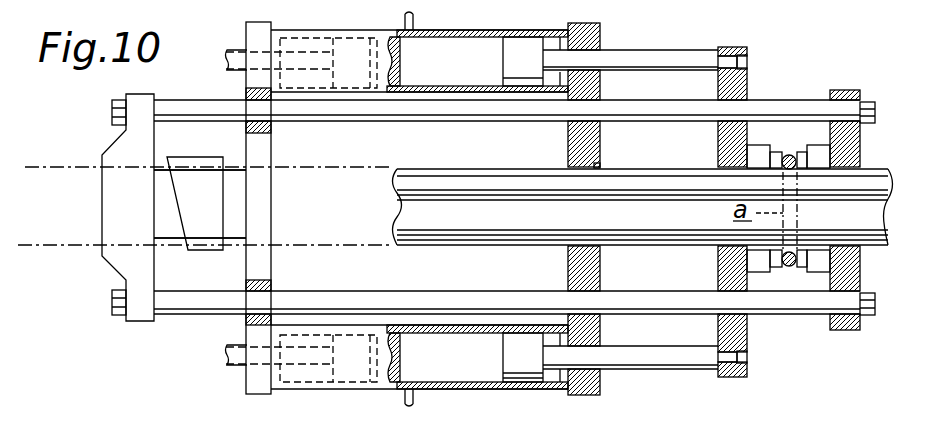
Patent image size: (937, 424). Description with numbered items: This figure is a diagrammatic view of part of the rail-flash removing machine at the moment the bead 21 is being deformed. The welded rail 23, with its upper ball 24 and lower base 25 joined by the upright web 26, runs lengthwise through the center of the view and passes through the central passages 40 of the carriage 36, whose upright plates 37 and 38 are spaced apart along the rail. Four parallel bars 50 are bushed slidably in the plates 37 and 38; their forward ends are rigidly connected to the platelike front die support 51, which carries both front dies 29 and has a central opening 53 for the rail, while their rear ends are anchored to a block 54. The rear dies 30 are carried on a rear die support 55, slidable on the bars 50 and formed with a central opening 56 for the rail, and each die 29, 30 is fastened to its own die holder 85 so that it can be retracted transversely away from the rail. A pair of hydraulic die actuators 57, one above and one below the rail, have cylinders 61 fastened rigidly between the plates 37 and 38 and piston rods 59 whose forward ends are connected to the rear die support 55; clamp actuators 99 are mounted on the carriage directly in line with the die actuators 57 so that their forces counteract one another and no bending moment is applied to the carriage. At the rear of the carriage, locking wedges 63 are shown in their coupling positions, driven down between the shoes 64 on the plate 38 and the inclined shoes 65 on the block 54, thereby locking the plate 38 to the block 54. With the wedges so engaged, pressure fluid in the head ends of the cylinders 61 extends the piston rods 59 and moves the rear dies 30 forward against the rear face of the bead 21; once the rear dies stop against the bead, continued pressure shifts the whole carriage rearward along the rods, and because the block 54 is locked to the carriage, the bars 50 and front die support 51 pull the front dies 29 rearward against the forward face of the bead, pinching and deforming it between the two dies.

The bead 21 is at (789, 142).
The rail 23 is at (418, 252).
The upper ball 24 is at (433, 180).
The lower base 25 is at (450, 240).
The upright web 26 is at (396, 217).
The front die 29 is at (800, 283).
The rear die 30 is at (777, 283).
The carriage 36 is at (240, 89).
The upright plate 37 is at (570, 143).
The upright plate 38 is at (270, 150).
The central passage 40 is at (600, 165).
The bar 50 is at (672, 100).
The front die support 51 is at (850, 95).
The central opening 53 is at (858, 166).
The block 54 is at (122, 263).
The rear die support 55 is at (743, 48).
The central opening 56 is at (718, 166).
The die actuator 57 is at (470, 102).
The piston rod 59 is at (697, 60).
The cylinder 61 is at (497, 85).
The locking wedge 63 is at (212, 230).
The shoe 64 is at (237, 200).
The shoe 65 is at (165, 195).
The die holder 85 is at (750, 264).
The clamp actuator 99 is at (355, 100).